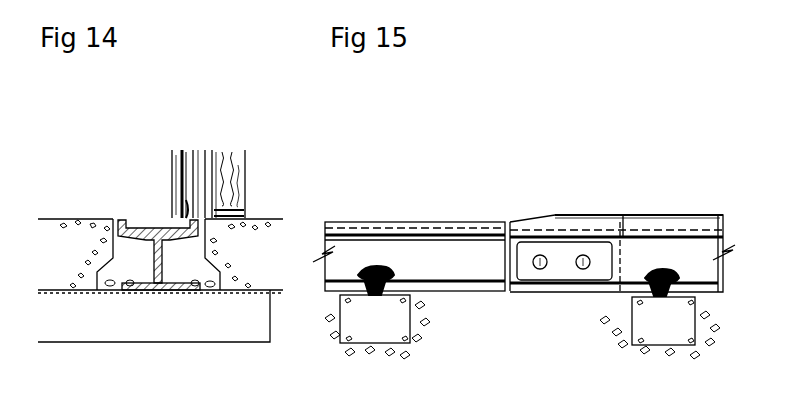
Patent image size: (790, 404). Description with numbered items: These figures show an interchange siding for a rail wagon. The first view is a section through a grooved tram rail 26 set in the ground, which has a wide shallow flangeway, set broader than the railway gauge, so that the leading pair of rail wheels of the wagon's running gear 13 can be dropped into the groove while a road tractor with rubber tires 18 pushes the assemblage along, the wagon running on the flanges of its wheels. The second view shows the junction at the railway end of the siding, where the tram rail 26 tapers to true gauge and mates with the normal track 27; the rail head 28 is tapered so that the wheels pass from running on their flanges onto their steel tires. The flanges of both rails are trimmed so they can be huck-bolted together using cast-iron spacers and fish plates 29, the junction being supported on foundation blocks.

In FIG. 14, the grooved tram rail 26 is at (148, 231).
In FIG. 15, the grooved tram rail 26 is at (417, 222).
In FIG. 14, the running gear 13 is at (185, 150).
In FIG. 14, the rubber tires 18 is at (226, 155).
In FIG. 15, the rail head 28 is at (537, 216).
In FIG. 15, the normal track 27 is at (620, 215).
In FIG. 15, the fish plates 29 is at (558, 268).